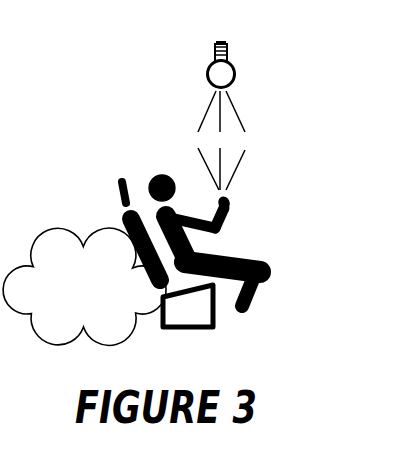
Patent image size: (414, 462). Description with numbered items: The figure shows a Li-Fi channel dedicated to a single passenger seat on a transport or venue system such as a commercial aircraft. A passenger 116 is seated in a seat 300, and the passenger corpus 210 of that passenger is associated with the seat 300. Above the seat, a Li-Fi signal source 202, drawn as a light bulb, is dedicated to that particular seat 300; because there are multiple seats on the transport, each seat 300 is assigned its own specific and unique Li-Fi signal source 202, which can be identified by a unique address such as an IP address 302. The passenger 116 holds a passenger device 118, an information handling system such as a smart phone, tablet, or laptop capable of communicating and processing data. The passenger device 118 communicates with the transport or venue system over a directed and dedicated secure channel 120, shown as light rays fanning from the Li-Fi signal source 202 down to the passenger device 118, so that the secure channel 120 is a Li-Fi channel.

The passenger 116 is at (160, 176).
The passenger device 118 is at (229, 208).
The secure channel 120 is at (238, 112).
The Li-Fi signal source 202 is at (229, 57).
The passenger corpus 210 is at (69, 318).
The seat 300 is at (118, 212).
The IP address 302 is at (100, 80).